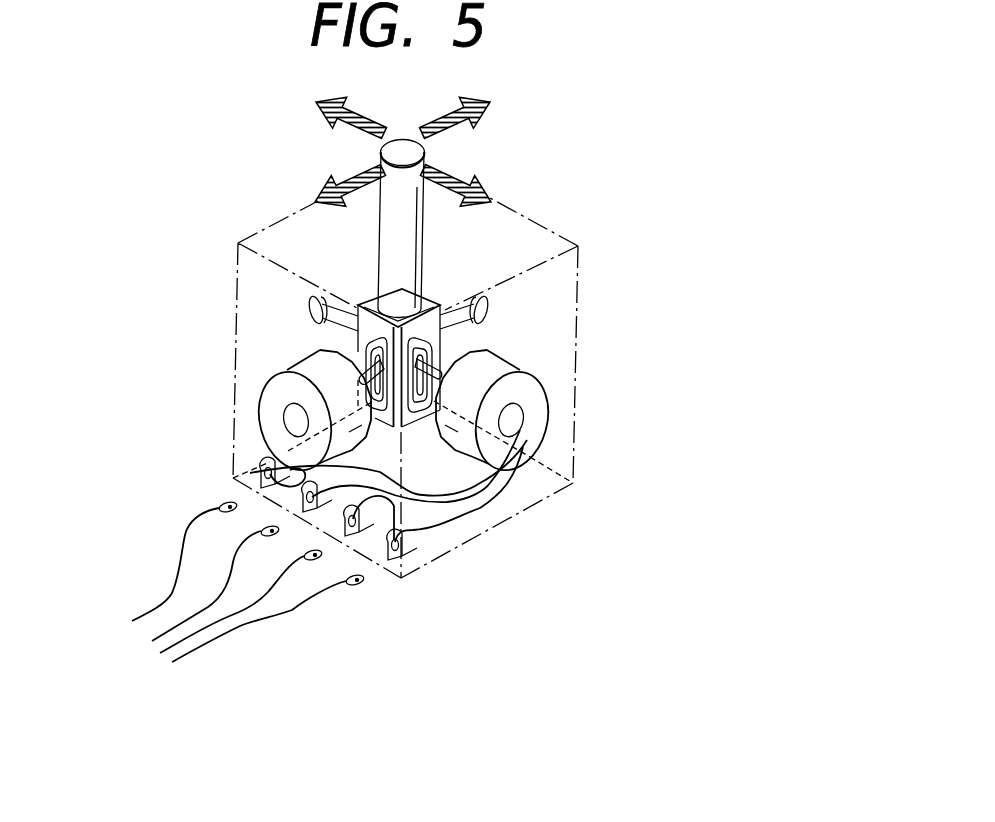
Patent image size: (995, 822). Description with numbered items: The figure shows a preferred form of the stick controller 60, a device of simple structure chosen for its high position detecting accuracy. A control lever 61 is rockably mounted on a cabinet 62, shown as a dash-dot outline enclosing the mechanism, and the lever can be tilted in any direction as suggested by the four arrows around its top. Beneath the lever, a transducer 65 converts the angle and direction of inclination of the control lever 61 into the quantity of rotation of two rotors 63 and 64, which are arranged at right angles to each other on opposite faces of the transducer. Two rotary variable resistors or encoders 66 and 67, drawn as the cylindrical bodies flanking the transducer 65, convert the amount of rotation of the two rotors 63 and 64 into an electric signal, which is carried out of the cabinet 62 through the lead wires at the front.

The stick controller 60 is at (575, 226).
The control lever 61 is at (437, 261).
The cabinet 62 is at (574, 364).
The rotor 63 is at (358, 339).
The rotor 64 is at (412, 346).
The transducer 65 is at (368, 304).
The rotary variable resistor or encoder 66 is at (262, 411).
The rotary variable resistor or encoder 67 is at (540, 410).